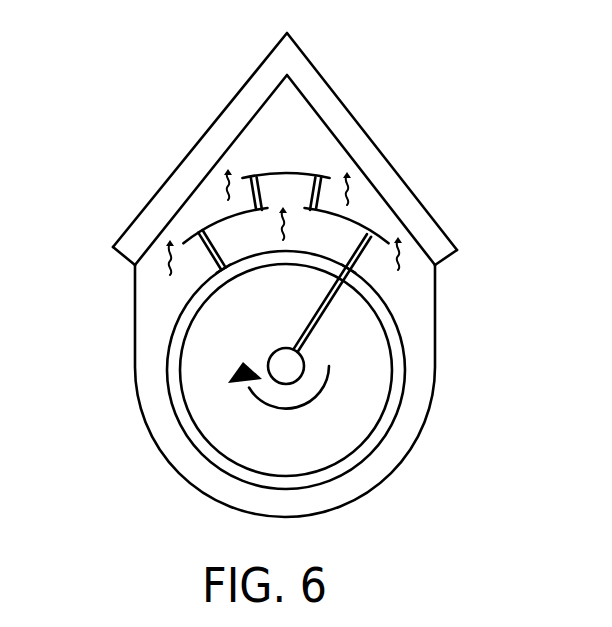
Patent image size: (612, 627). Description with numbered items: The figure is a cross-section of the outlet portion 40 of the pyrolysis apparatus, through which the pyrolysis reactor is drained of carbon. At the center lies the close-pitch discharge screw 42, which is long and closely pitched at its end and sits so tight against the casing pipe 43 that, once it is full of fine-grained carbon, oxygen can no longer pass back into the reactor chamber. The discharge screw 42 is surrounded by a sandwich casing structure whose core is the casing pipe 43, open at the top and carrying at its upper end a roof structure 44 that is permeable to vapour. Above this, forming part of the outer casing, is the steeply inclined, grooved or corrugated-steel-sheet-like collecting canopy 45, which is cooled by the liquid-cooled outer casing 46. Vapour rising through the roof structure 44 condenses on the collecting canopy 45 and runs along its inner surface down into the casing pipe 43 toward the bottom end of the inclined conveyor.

The outlet portion 40 is at (301, 275).
The discharge screw 42 is at (372, 378).
The casing pipe 43 is at (170, 408).
The roof structure 44 is at (220, 217).
The collecting canopy 45 is at (260, 108).
The liquid-cooled outer casing 46 is at (350, 110).